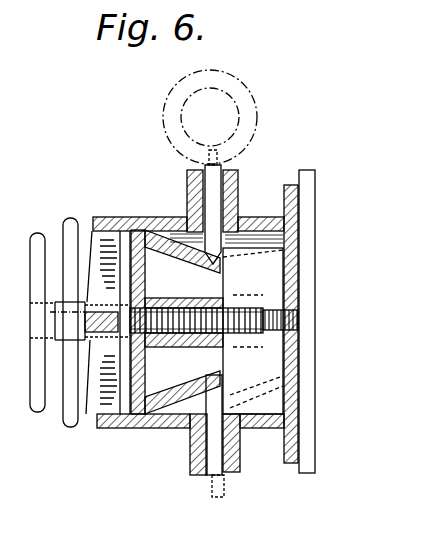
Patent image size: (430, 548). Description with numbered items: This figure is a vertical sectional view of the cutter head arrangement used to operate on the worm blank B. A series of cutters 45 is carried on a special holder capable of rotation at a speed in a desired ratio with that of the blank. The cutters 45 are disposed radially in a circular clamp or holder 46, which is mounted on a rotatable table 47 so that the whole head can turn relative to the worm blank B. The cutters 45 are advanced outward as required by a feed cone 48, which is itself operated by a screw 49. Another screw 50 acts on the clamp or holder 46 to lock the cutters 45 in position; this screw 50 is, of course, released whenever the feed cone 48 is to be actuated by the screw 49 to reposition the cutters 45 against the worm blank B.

The worm blank B is at (164, 106).
The cutters 45 is at (218, 166).
The circular clamp or holder 46 is at (228, 322).
The rotatable table 47 is at (316, 168).
The feed cone 48 is at (172, 226).
The screw 49 is at (184, 303).
The screw 50 is at (270, 299).